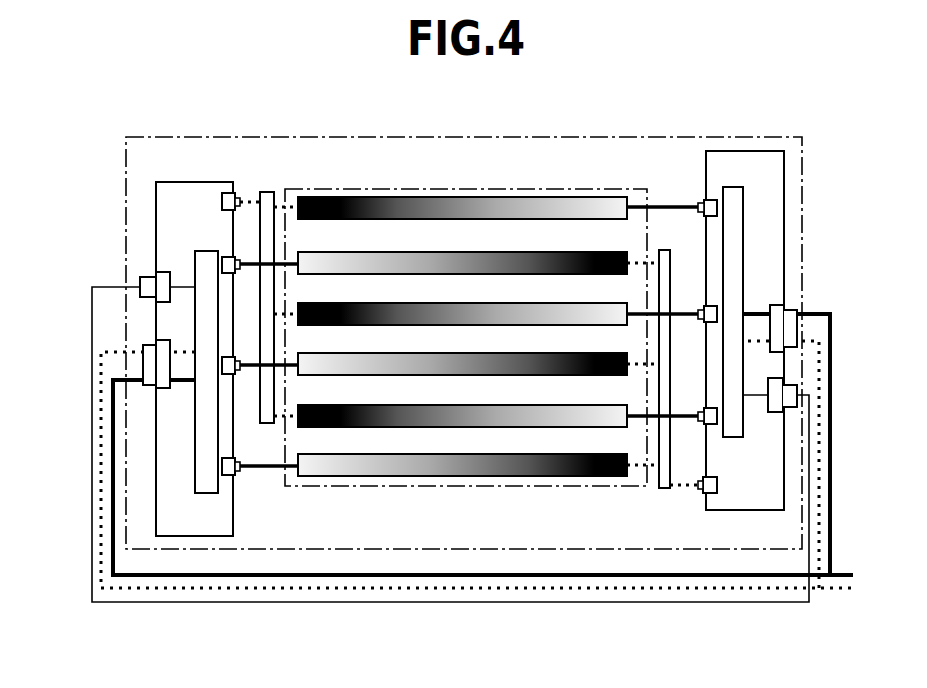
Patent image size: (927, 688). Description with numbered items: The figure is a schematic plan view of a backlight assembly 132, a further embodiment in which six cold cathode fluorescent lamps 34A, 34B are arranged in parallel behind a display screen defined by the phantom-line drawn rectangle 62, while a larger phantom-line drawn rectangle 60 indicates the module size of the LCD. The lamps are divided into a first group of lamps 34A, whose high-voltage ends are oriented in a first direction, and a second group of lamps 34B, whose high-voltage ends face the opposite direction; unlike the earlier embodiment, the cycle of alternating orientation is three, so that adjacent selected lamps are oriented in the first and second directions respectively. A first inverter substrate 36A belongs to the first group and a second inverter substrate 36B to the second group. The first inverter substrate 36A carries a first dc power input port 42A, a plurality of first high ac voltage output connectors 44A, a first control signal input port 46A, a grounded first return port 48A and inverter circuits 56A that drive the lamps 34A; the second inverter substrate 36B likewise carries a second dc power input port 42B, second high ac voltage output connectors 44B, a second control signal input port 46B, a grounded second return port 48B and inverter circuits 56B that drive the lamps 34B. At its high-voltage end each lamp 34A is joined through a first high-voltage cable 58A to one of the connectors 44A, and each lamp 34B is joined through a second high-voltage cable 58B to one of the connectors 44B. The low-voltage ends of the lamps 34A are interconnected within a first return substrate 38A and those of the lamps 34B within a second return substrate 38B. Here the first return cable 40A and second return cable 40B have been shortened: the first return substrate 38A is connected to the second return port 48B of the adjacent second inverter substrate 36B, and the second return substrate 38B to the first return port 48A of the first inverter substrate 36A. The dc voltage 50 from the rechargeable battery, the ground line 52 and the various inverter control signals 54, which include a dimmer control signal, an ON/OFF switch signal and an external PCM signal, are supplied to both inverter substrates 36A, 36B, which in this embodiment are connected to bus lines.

The backlight assembly 132 is at (758, 117).
The cold cathode fluorescent lamps 34A is at (368, 197).
The cold cathode fluorescent lamps 34B is at (432, 252).
The first inverter substrate 36A is at (784, 200).
The second inverter substrate 36B is at (156, 185).
The first return substrate 38A is at (270, 192).
The second return substrate 38B is at (660, 488).
The first return cable 40A is at (250, 200).
The second return cable 40B is at (685, 487).
The first dc power input port 42A is at (773, 303).
The second dc power input port 42B is at (156, 341).
The first high ac voltage output connectors 44A is at (720, 202).
The second high ac voltage output connectors 44B is at (222, 257).
The first control signal input port 46A is at (775, 412).
The second control signal input port 46B is at (157, 273).
The first return port 48A is at (718, 490).
The second return port 48B is at (228, 193).
The dc voltage 50 is at (113, 522).
The ground line 52 is at (100, 418).
The inverter control signals 54 is at (92, 305).
The inverter circuits 56A is at (745, 368).
The inverter circuits 56B is at (201, 493).
The first high-voltage cable 58A is at (637, 313).
The second high-voltage cable 58B is at (292, 200).
The phantom-line drawn rectangle 60 is at (600, 137).
The phantom-line drawn rectangle 62 is at (554, 188).